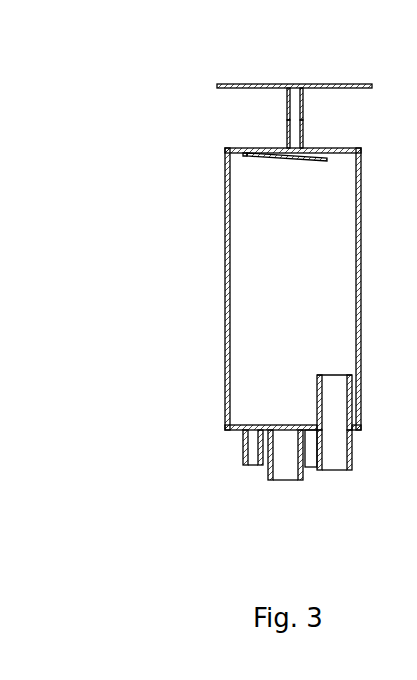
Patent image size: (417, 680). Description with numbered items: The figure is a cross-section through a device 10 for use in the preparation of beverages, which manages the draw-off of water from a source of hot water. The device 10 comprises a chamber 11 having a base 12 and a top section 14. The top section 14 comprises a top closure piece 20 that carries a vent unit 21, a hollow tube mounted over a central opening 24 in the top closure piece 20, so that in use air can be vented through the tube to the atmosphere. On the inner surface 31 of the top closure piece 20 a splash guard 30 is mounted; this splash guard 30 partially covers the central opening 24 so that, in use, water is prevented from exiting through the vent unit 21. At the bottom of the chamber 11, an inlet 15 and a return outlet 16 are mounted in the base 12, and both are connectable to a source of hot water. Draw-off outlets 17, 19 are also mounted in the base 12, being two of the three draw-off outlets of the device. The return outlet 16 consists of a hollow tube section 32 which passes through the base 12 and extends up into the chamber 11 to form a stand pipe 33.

The device 10 is at (152, 166).
The chamber 11 is at (247, 301).
The base 12 is at (236, 432).
The top section 14 is at (177, 86).
The inlet 15 is at (283, 470).
The return outlet 16 is at (335, 462).
The draw-off outlet 17 is at (248, 458).
The draw-off outlet 19 is at (310, 467).
The top closure piece 20 is at (243, 150).
The vent unit 21 is at (293, 108).
The central opening 24 is at (294, 148).
The splash guard 30 is at (296, 158).
The inner surface 31 is at (247, 154).
The hollow tube section 32 is at (338, 443).
The stand pipe 33 is at (338, 405).